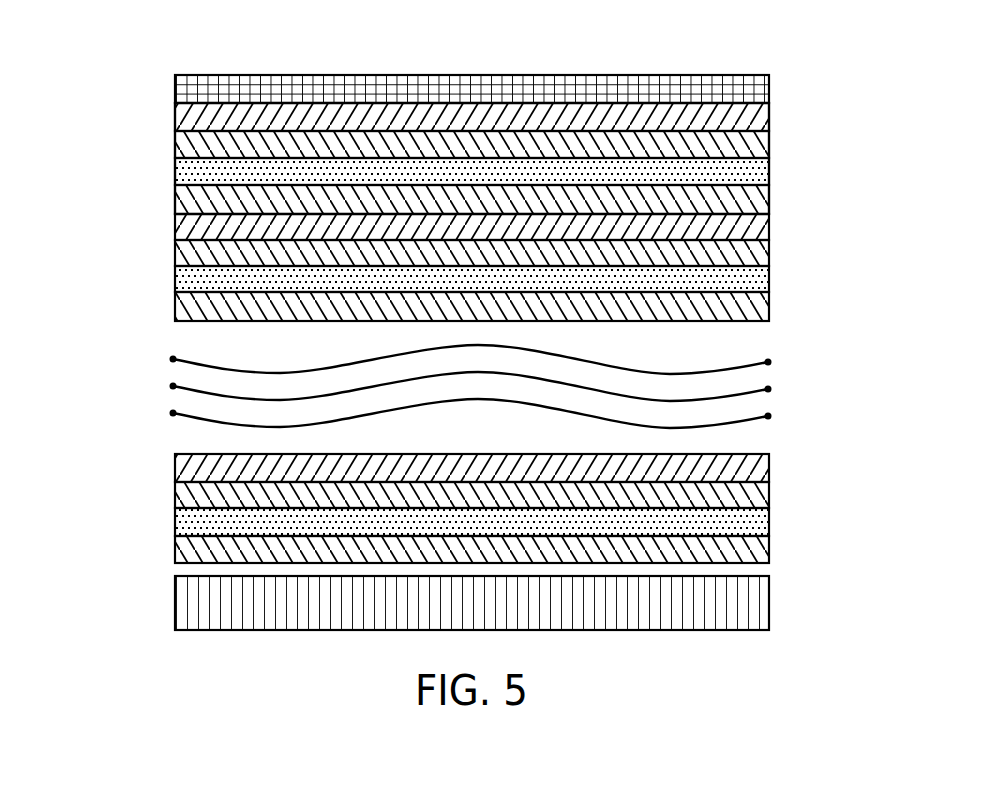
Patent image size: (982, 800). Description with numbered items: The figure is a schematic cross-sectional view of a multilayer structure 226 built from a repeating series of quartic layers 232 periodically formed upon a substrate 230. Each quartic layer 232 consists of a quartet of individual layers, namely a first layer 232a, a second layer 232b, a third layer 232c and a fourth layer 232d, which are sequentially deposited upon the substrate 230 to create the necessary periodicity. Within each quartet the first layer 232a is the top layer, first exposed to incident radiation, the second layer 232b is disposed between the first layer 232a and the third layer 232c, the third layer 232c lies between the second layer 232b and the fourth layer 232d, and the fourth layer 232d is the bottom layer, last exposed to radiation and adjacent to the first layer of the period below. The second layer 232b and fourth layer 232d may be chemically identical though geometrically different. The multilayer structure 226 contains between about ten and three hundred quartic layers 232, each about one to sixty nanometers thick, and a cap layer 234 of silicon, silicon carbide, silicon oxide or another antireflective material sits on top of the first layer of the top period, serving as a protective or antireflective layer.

The multilayer structure 226 is at (139, 54).
The cap layer 234 is at (769, 93).
The quartic layer 232 is at (160, 212).
The first layer 232a is at (769, 118).
The second layer 232b is at (769, 145).
The third layer 232c is at (769, 172).
The fourth layer 232d is at (769, 198).
The substrate 230 is at (769, 603).